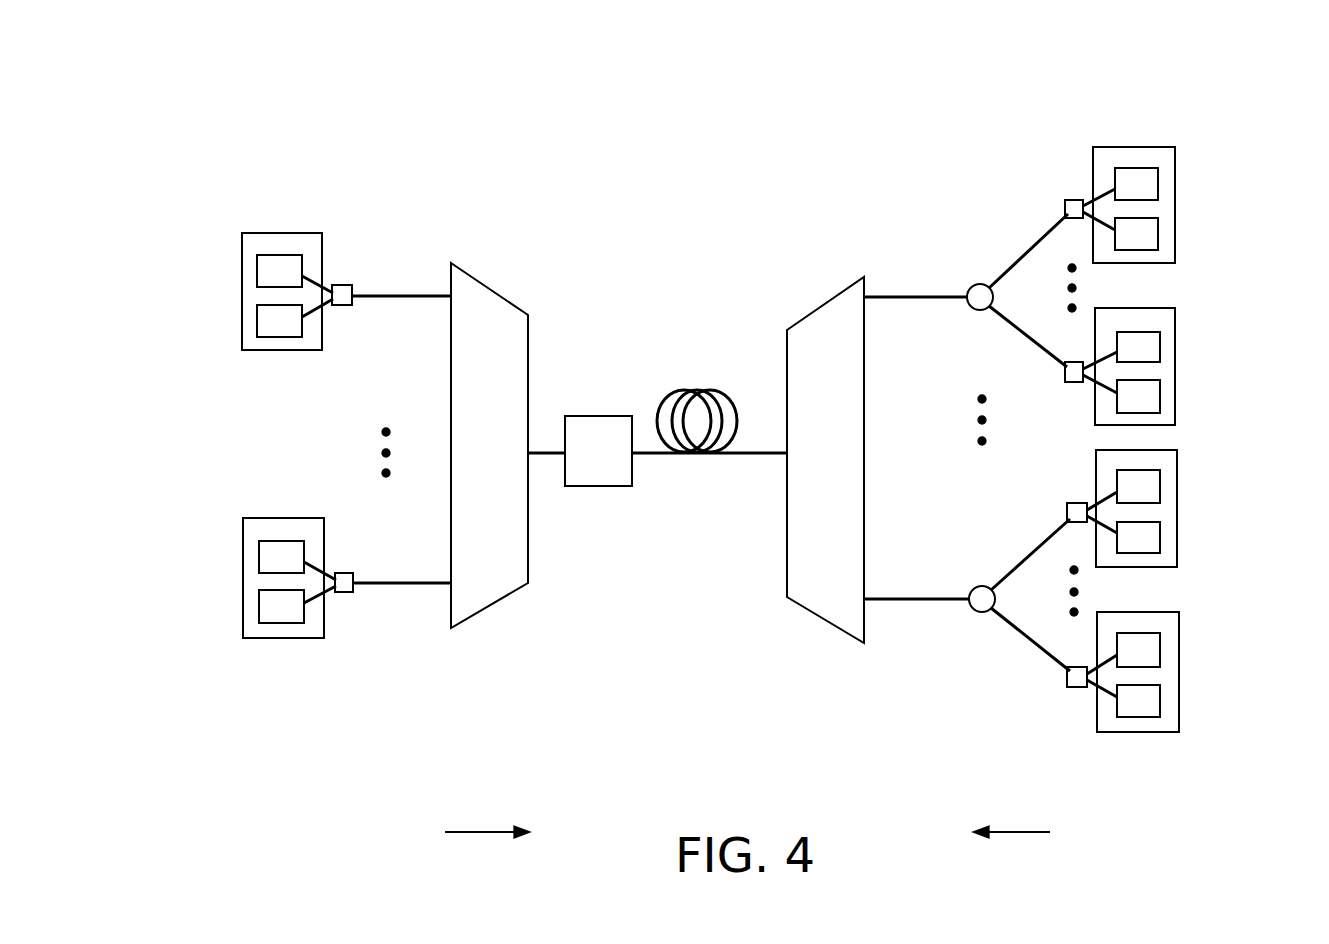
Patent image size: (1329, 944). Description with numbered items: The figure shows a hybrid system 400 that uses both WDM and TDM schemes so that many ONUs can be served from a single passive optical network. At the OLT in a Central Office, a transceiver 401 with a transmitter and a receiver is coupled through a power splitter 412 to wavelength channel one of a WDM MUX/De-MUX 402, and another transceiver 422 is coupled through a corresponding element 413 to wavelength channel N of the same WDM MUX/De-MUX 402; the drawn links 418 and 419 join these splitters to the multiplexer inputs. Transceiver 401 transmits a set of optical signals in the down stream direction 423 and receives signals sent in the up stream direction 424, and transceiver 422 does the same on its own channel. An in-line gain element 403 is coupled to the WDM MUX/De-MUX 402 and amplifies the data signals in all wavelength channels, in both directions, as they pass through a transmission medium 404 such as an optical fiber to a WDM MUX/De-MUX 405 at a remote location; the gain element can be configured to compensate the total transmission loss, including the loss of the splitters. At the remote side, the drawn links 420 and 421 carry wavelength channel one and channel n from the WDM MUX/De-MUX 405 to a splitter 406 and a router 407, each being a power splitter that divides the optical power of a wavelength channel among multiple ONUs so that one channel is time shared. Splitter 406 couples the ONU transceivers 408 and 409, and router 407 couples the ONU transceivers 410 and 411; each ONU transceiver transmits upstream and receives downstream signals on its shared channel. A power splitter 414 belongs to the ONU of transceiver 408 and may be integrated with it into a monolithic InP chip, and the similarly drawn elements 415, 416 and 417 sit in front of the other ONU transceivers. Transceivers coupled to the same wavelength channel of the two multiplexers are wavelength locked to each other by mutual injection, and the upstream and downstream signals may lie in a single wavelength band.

The hybrid system 400 is at (1313, 45).
The transceiver 401 is at (242, 250).
The WDM MUX/De-MUX 402 is at (493, 302).
The in-line gain element 403 is at (612, 416).
The transmission medium 404 is at (735, 456).
The WDM MUX/De-MUX 405 is at (820, 318).
The splitter 406 is at (992, 292).
The router 407 is at (994, 595).
The transceiver 408 is at (1152, 153).
The transceiver 409 is at (1152, 318).
The transceiver 410 is at (1155, 458).
The transceiver 411 is at (1155, 617).
The power splitter 412 is at (350, 283).
The OLT connector/coupler 413 is at (342, 595).
The power splitter 414 is at (1068, 198).
The ONU connector/coupler 415 is at (1070, 360).
The ONU connector/coupler 416 is at (1070, 502).
The ONU connector/coupler 417 is at (1070, 665).
The OLT-to-splitter fiber link 418 is at (413, 300).
The OLT-to-splitter fiber link 419 is at (407, 587).
The splitter-to-PS fiber link 420 is at (910, 294).
The splitter-to-PS fiber link 421 is at (937, 603).
The transceiver 422 is at (243, 548).
The down stream direction 423 is at (487, 816).
The up stream direction 424 is at (1011, 816).